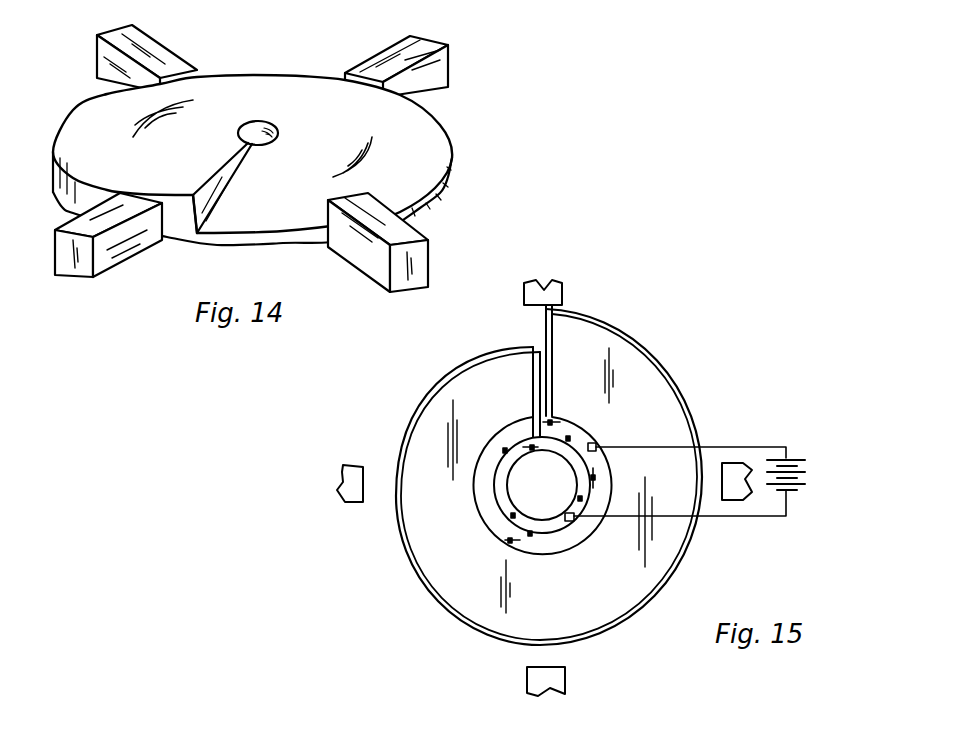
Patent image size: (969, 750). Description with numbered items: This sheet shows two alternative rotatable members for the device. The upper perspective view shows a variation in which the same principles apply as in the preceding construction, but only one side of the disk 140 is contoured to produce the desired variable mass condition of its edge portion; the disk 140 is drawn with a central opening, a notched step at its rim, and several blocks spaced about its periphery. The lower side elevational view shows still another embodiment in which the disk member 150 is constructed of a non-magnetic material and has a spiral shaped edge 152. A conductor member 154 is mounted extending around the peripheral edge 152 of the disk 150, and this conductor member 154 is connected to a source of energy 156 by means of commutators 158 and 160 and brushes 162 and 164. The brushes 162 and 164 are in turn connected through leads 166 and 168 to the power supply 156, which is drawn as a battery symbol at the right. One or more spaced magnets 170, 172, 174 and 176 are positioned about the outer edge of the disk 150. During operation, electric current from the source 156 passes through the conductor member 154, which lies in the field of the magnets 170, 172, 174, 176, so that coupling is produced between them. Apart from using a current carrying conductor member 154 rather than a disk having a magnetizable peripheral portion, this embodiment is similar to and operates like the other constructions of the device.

In FIG. 14, the disk 140 is at (462, 159).
In FIG. 15, the disk member 150 is at (571, 482).
In FIG. 15, the spiral shaped edge 152 is at (665, 577).
In FIG. 15, the conductor member 154 is at (620, 621).
In FIG. 15, the source of energy 156 is at (820, 486).
In FIG. 15, the commutator 158 is at (613, 472).
In FIG. 15, the commutator 160 is at (506, 497).
In FIG. 15, the brush 162 is at (594, 440).
In FIG. 15, the brush 164 is at (567, 522).
In FIG. 15, the lead 166 is at (757, 447).
In FIG. 15, the lead 168 is at (775, 517).
In FIG. 15, the magnet 170 is at (548, 288).
In FIG. 15, the magnet 172 is at (737, 490).
In FIG. 15, the magnet 174 is at (543, 681).
In FIG. 15, the magnet 176 is at (352, 488).